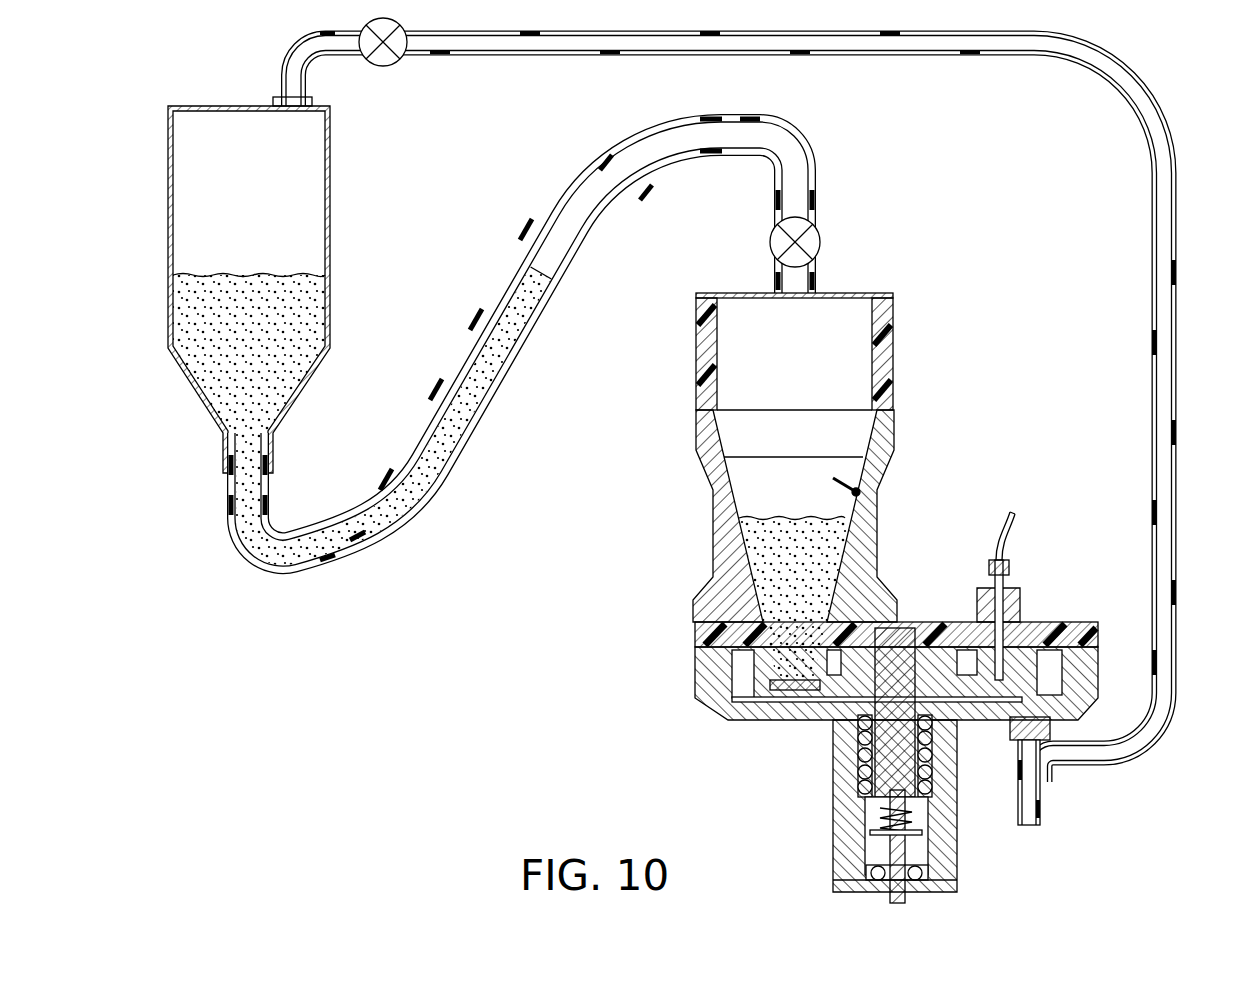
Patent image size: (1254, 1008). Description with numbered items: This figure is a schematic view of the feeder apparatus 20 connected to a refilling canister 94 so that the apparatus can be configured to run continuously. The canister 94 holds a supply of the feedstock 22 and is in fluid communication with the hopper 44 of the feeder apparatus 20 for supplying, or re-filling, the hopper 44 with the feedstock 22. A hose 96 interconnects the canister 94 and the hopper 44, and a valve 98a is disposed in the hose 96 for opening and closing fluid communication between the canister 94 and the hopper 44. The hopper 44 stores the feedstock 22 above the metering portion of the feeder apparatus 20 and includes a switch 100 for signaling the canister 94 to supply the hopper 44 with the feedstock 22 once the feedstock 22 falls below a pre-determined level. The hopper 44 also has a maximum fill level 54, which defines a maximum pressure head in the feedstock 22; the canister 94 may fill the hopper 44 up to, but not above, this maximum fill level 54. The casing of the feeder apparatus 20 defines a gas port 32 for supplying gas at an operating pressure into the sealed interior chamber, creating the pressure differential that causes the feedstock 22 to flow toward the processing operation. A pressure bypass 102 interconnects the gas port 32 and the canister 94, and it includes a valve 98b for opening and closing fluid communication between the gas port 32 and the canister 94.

The canister 94 is at (168, 125).
The feedstock 22 is at (205, 290).
The hose 96 is at (553, 218).
The valve 98a is at (817, 233).
The valve 98b is at (397, 66).
The pressure bypass 102 is at (1143, 108).
The hopper 44 is at (895, 333).
The maximum fill level 54 is at (757, 457).
The switch 100 is at (858, 490).
The feeder apparatus 20 is at (930, 574).
The gas port 32 is at (1018, 737).